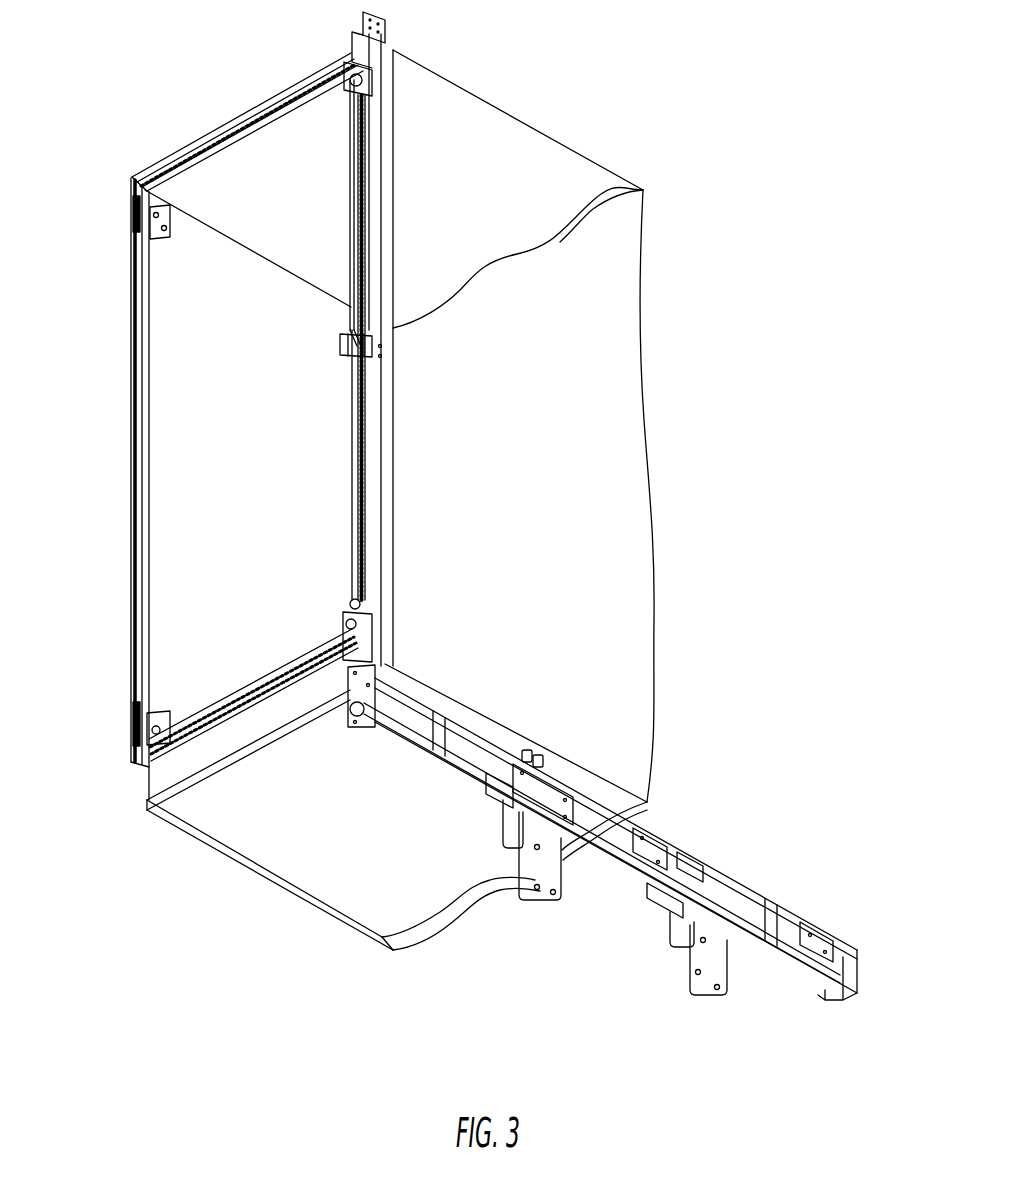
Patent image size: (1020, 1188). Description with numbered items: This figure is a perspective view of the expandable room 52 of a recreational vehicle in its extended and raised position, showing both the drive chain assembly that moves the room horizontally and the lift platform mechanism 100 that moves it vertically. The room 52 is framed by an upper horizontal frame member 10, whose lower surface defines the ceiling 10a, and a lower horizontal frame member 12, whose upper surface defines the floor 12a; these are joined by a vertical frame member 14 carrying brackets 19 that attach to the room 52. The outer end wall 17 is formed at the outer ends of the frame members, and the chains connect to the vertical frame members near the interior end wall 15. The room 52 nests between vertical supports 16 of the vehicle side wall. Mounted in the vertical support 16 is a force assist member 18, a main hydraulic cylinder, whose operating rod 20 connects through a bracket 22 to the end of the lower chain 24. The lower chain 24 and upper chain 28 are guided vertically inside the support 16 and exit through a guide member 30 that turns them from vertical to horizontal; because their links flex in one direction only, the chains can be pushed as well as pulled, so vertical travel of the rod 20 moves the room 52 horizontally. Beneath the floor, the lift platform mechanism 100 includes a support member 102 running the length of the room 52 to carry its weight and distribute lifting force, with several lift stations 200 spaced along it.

The upper horizontal frame member 10 is at (267, 406).
The ceiling 10a is at (595, 210).
The lower horizontal frame member 12 is at (252, 738).
The floor 12a is at (275, 855).
The vertical frame member 14 is at (138, 503).
The interior end wall 15 is at (148, 393).
The vertical support 16 is at (377, 142).
The outer end wall 17 is at (393, 275).
The force assist member 18 is at (354, 198).
The brackets 19 is at (132, 190).
The operating rod 20 is at (353, 505).
The bracket 22 is at (366, 612).
The lower chain 24 is at (228, 703).
The upper chain 28 is at (188, 152).
The guide member 30 is at (357, 50).
The expandable room 52 is at (642, 392).
The lift platform mechanism 100 is at (602, 832).
The support member 102 is at (747, 896).
The lift stations 200 is at (718, 990).